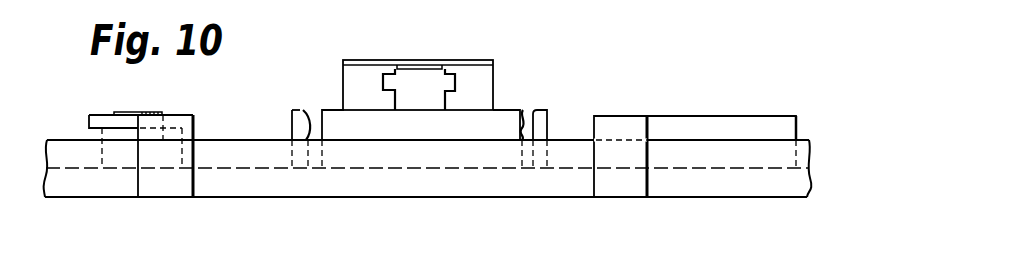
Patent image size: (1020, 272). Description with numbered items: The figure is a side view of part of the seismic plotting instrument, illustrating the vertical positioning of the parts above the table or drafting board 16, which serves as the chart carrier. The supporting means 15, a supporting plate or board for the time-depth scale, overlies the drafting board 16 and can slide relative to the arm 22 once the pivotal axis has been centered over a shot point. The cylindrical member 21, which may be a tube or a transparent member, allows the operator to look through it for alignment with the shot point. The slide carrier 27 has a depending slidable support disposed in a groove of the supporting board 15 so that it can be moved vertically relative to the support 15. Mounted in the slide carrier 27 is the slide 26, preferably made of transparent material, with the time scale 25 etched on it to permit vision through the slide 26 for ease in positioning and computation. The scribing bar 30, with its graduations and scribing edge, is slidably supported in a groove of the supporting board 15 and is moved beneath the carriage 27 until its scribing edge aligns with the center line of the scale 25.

The supporting means 15 is at (325, 109).
The table or drafting board 16 is at (278, 190).
The cylindrical member 21 is at (133, 112).
The arm 22 is at (100, 113).
The time scale 25 is at (408, 66).
The slide 26 is at (425, 85).
The slide carrier 27 is at (467, 93).
The scribing bar 30 is at (685, 122).